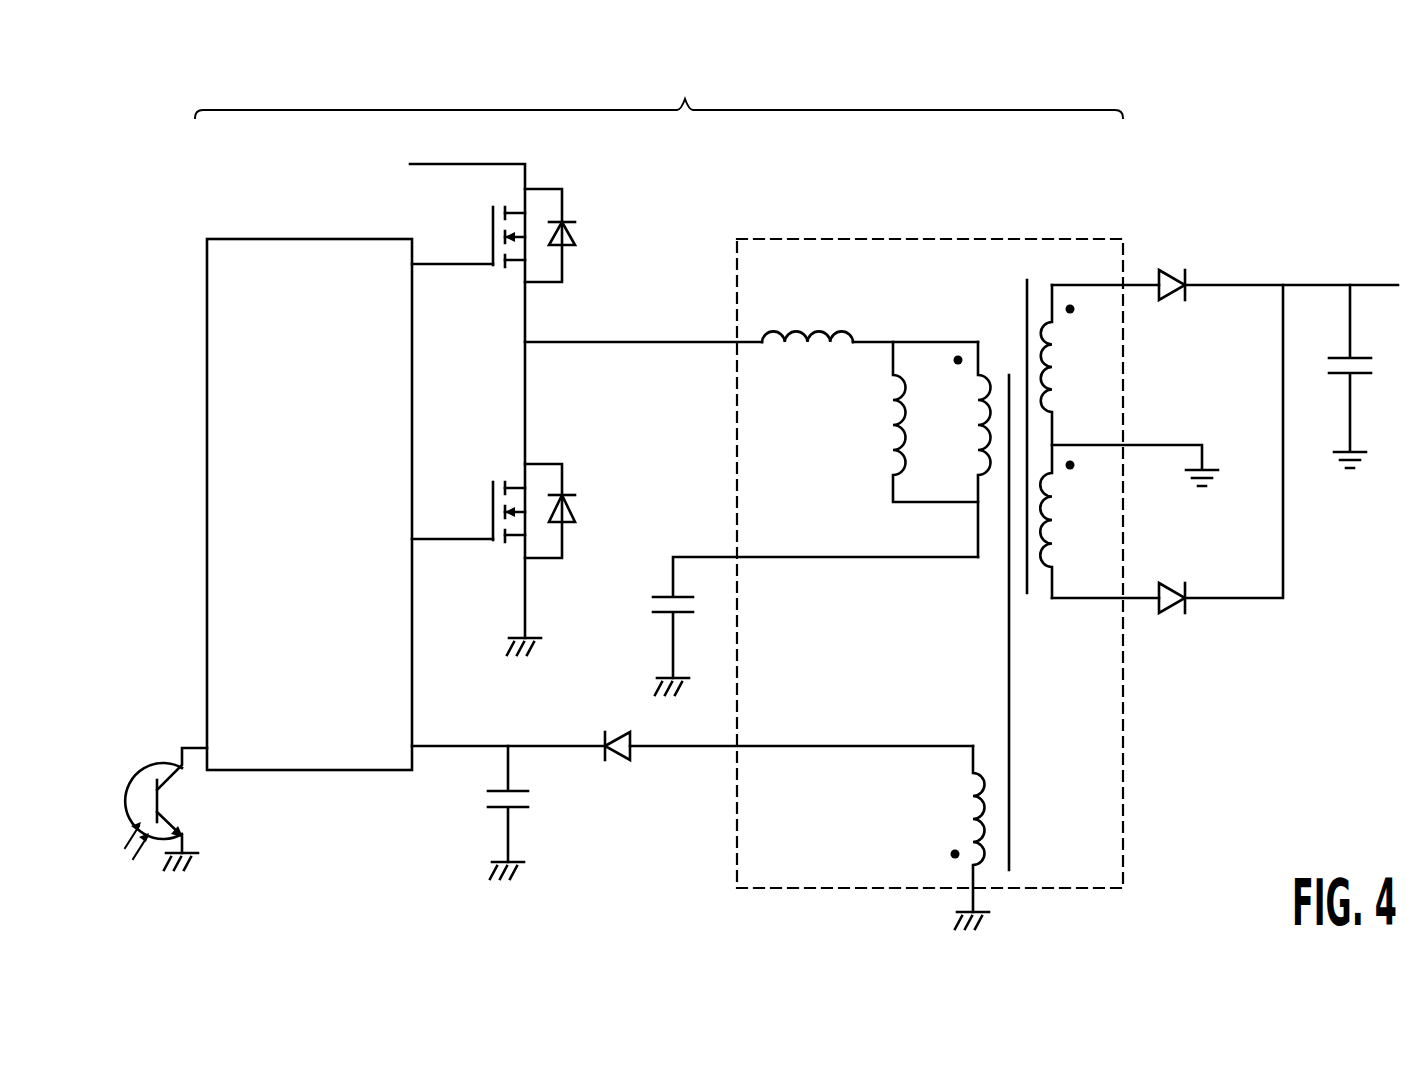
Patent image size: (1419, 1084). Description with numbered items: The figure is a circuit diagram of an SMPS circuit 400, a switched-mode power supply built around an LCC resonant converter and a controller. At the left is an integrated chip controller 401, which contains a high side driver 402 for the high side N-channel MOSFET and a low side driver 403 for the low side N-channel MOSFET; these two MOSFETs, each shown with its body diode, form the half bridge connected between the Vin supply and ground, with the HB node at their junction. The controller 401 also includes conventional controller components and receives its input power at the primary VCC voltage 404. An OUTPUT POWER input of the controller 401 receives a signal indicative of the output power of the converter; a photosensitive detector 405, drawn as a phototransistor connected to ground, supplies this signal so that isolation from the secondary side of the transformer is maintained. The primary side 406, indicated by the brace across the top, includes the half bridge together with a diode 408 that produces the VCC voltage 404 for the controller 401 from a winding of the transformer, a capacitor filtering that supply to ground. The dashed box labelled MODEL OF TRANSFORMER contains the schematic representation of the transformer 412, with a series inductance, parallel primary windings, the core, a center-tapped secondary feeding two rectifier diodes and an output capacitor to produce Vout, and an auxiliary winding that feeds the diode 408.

The SMPS circuit 400 is at (1355, 167).
The IC controller 401 is at (207, 408).
The high side driver 402 is at (285, 262).
The low side driver 403 is at (365, 522).
The primary VCC voltage 404 is at (350, 752).
The photosensitive detector 405 is at (160, 765).
The primary side 406 is at (659, 361).
The diode 408 is at (630, 758).
The transformer 412 is at (737, 268).